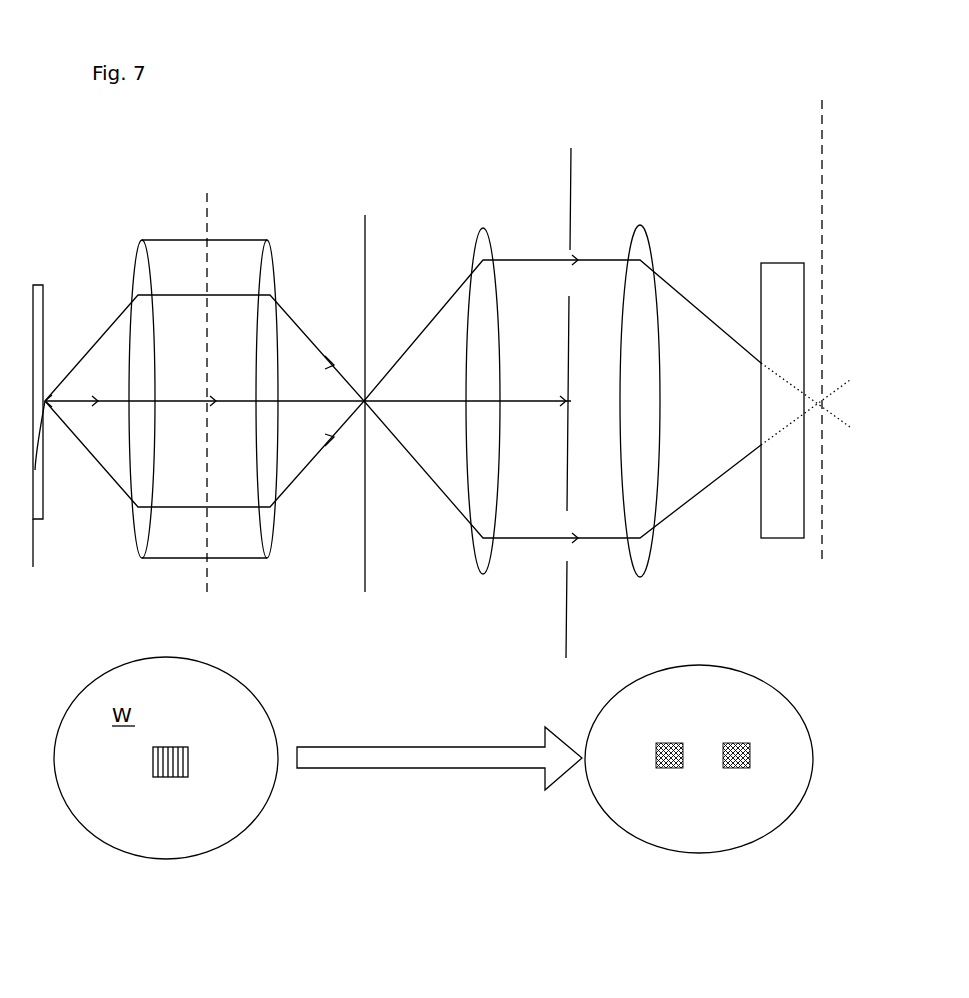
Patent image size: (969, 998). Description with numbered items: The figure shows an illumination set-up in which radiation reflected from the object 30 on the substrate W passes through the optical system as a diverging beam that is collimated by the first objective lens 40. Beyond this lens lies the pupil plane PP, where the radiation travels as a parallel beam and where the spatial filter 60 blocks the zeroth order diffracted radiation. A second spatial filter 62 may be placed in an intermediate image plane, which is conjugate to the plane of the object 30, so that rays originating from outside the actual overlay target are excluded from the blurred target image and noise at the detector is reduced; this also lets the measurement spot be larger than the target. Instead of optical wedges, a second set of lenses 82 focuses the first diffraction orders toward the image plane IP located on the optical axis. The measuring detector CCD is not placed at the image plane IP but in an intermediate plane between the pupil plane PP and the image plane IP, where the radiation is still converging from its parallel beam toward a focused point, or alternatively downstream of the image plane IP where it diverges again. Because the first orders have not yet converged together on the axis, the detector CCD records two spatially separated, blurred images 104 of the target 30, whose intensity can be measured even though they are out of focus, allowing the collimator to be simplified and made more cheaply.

The object 30 is at (152, 758).
The first objective lens 40 is at (143, 272).
The spatial filter 60 is at (568, 188).
The second spatial filter 62 is at (363, 243).
The second set of lenses 82 is at (483, 247).
The blurred images 104 is at (693, 866).
The substrate W is at (43, 288).
The pupil plane PP is at (207, 212).
The measuring detector CCD is at (781, 262).
The image plane IP is at (812, 319).